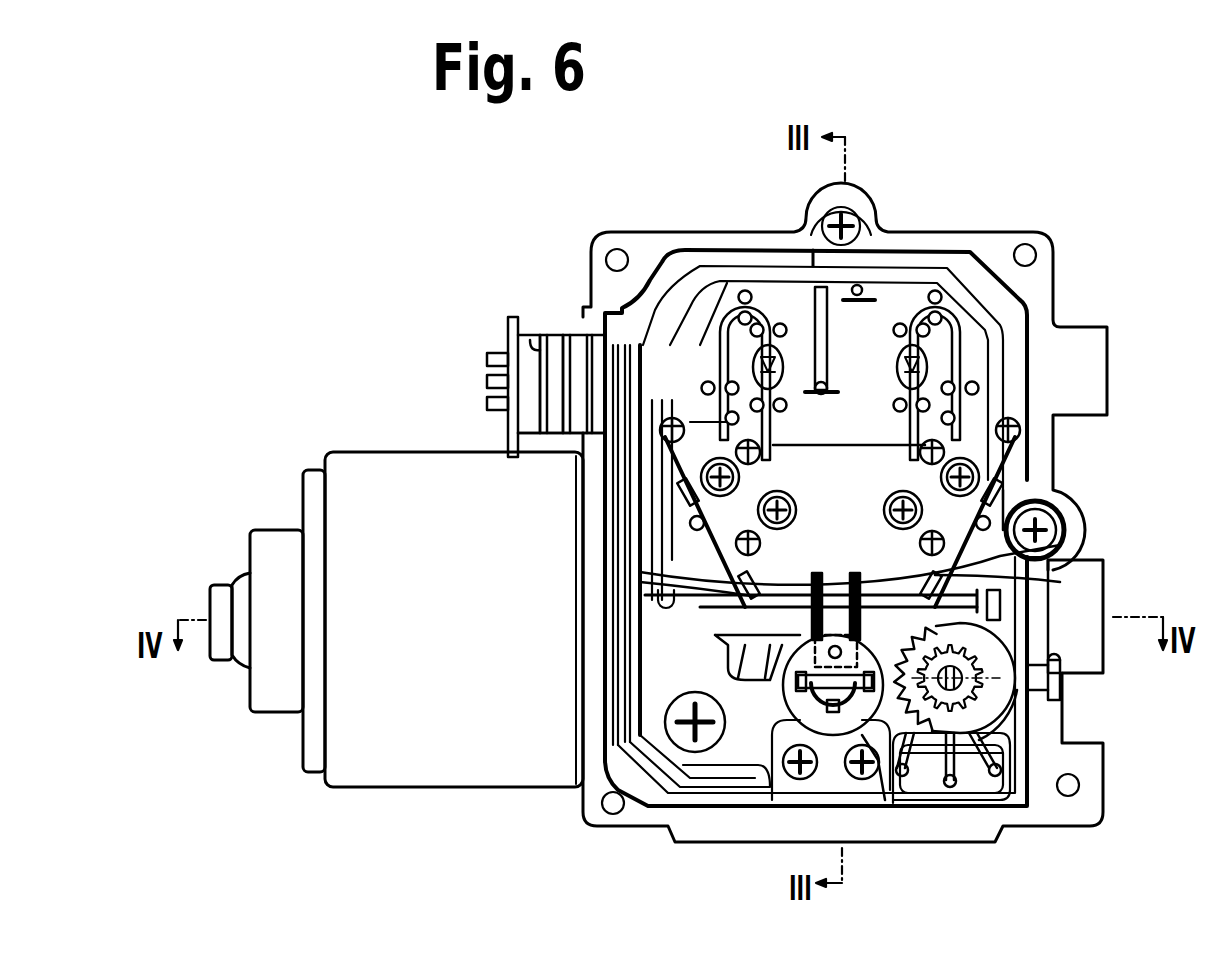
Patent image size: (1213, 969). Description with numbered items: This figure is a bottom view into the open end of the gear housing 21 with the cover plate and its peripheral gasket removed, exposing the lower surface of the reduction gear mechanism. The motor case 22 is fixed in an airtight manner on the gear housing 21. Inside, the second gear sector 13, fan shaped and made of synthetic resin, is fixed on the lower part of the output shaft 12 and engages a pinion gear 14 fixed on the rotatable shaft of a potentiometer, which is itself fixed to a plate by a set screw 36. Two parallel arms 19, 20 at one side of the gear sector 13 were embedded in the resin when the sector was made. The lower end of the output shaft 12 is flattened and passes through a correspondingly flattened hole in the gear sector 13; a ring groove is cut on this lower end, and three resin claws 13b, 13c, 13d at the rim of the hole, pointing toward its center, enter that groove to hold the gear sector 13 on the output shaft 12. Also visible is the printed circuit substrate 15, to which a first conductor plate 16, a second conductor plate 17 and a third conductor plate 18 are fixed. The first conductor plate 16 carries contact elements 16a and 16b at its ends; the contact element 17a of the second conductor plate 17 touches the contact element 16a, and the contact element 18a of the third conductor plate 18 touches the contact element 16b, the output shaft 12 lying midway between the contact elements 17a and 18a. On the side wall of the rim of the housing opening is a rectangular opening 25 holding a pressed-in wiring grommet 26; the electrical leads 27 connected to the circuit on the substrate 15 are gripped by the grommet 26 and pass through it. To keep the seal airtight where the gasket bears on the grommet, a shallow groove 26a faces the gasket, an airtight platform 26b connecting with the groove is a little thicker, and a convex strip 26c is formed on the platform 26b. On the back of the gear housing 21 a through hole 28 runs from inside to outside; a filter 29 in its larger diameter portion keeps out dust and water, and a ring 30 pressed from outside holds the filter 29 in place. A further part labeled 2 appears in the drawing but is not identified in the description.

The lever 2 is at (715, 637).
The output shaft 12 is at (822, 697).
The second gear sector 13 is at (786, 700).
The claw 13b is at (893, 770).
The claw 13c is at (838, 715).
The claw 13d is at (798, 681).
The pinion gear 14 is at (1000, 717).
The printed circuit substrate 15 is at (888, 295).
The first conductor plate 16 is at (900, 340).
The contact element 16a is at (1000, 556).
The contact element 16b is at (745, 583).
The second conductor plate 17 is at (1013, 517).
The contact element 17a is at (1053, 576).
The third conductor plate 18 is at (700, 558).
The contact element 18a is at (730, 594).
The parallel arm 19 is at (855, 575).
The parallel arm 20 is at (818, 575).
The gear housing 21 is at (702, 235).
The motor case 22 is at (348, 452).
The rectangular opening 25 is at (530, 343).
The wiring grommet 26 is at (506, 326).
The shallow groove 26a is at (530, 415).
The airtight platform 26b is at (548, 340).
The convex strip 26c is at (565, 340).
The electrical leads 27 is at (489, 360).
The through hole 28 is at (1060, 646).
The filter 29 is at (1063, 681).
The ring 30 is at (1063, 695).
The set screw 36 is at (1007, 653).